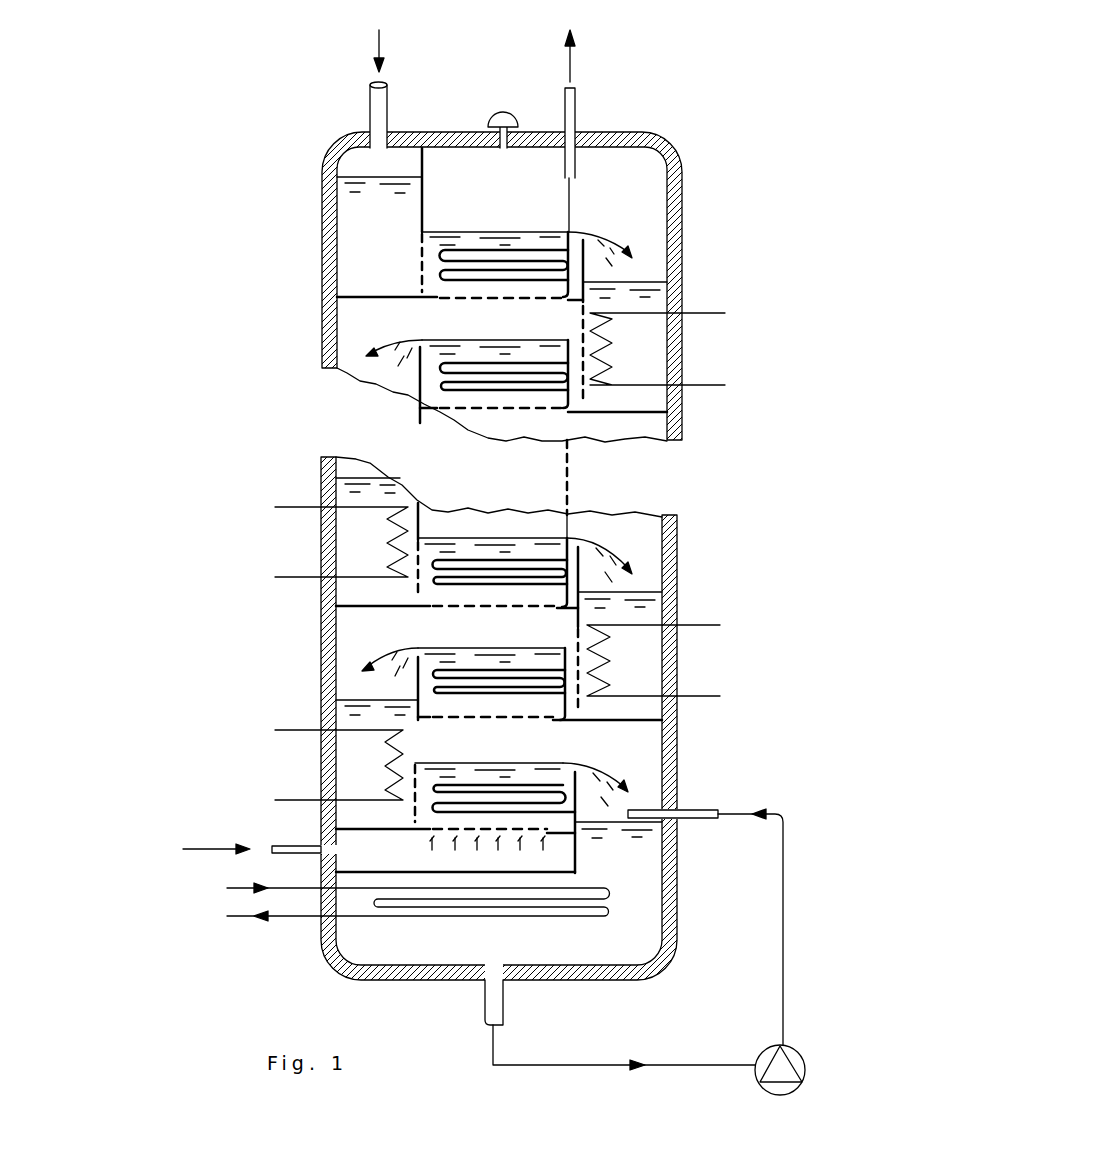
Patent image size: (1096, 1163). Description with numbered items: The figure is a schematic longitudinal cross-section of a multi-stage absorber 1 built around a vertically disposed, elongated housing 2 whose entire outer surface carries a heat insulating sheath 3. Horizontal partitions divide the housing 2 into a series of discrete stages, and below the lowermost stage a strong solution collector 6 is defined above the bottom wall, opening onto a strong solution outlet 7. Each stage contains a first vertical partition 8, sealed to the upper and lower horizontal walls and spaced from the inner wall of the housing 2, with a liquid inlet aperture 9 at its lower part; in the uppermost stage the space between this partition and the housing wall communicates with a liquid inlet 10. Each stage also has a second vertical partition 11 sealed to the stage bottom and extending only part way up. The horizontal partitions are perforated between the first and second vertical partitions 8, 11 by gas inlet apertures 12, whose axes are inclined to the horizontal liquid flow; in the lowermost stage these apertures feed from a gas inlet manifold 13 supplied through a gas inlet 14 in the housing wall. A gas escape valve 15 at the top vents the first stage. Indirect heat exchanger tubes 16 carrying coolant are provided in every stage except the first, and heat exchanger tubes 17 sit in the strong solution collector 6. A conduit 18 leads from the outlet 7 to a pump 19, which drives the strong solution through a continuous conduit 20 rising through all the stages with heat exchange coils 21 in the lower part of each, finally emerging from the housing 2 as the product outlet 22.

The multi-stage absorber 1 is at (537, 538).
The housing 2 is at (664, 217).
The heat insulating sheath 3 is at (667, 566).
The strong solution collector 6 is at (353, 938).
The strong solution outlet 7 is at (485, 1002).
The first vertical partition 8 is at (424, 196).
The liquid inlet aperture 9 is at (420, 270).
The liquid inlet 10 is at (370, 108).
The second vertical partition 11 is at (587, 278).
The gas inlet apertures 12 is at (463, 300).
The gas inlet manifold 13 is at (553, 859).
The gas inlet 14 is at (302, 854).
The gas escape valve 15 is at (496, 118).
The indirect heat exchanger tubes 16 is at (600, 366).
The heat exchanger tubes 17 is at (582, 920).
The conduit 18 is at (673, 1064).
The pump 19 is at (788, 1049).
The continuous conduit 20 is at (572, 202).
The heat exchange coils 21 is at (476, 250).
The product outlet 22 is at (577, 112).